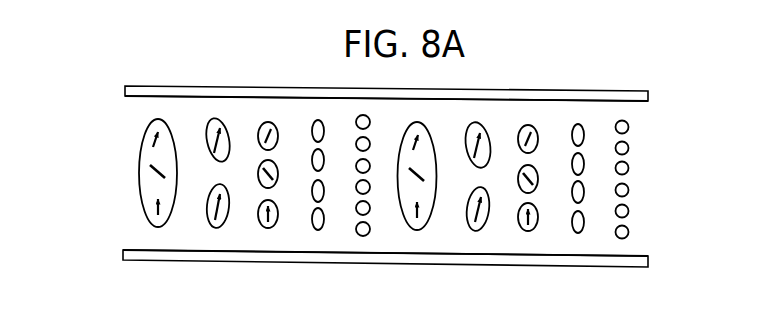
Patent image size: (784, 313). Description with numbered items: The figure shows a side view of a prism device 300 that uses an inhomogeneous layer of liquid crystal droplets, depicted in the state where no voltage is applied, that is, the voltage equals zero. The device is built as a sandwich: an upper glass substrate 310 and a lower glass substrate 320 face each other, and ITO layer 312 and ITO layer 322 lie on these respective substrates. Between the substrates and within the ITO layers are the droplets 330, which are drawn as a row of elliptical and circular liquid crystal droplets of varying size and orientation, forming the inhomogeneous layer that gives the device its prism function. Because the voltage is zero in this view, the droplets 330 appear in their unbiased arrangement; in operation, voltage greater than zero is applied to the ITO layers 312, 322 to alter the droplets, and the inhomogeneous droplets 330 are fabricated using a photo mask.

The prism device 300 is at (110, 142).
The glass substrate 310 is at (428, 71).
The ITO layer 312 is at (437, 93).
The glass substrate 320 is at (348, 273).
The ITO layer 322 is at (343, 230).
The droplets 330 is at (677, 220).